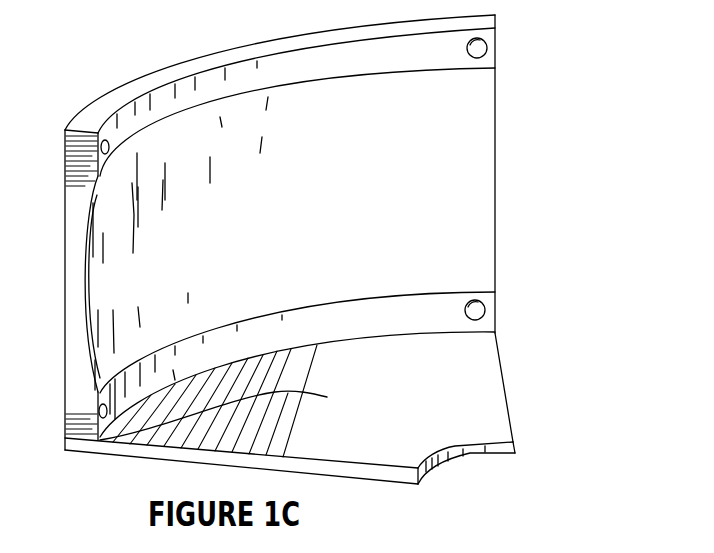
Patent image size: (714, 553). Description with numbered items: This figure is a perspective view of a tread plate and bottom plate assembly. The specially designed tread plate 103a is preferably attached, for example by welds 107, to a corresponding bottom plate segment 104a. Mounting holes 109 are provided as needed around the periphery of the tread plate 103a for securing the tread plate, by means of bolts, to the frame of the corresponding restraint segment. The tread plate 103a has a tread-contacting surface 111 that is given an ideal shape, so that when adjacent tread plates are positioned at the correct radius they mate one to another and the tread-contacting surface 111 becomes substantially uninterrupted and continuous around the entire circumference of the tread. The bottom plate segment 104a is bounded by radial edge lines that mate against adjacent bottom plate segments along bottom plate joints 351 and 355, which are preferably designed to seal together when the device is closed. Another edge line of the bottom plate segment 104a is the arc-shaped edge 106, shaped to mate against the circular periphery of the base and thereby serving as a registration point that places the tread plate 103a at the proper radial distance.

The tread plate 103a is at (311, 232).
The mounting holes 109 is at (487, 52).
The tread-contacting surface 111 is at (453, 185).
The welds 107 is at (495, 333).
The bottom plate joint 351 is at (503, 367).
The bottom plate segment 104a is at (335, 432).
The bottom plate joint 355 is at (343, 468).
The arc-shaped edge 106 is at (463, 458).